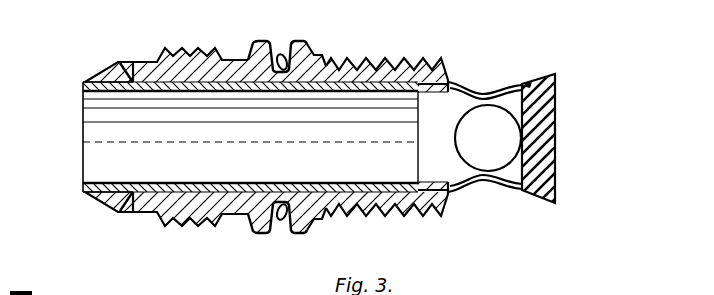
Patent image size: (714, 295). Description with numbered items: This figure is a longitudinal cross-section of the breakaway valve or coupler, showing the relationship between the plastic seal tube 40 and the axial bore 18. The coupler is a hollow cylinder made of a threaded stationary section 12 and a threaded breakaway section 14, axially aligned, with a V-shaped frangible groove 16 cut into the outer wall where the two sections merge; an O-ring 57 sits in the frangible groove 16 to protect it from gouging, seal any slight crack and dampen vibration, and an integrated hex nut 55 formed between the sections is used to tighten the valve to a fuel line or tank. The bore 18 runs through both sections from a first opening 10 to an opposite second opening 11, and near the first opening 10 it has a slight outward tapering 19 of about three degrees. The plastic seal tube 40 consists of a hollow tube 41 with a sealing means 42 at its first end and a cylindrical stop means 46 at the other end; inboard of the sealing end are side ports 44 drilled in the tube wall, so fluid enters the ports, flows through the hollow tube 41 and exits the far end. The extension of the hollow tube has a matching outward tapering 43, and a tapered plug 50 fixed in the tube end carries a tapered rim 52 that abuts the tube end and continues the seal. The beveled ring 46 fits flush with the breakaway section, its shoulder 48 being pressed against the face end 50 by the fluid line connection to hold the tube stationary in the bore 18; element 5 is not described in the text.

The first opening 10 is at (470, 195).
The second opening 11 is at (125, 80).
The threaded stationary section 12 is at (378, 56).
The threaded breakaway section 14 is at (172, 49).
The frangible groove 16 is at (318, 43).
The bore 18 is at (147, 84).
The outward tapering 19 is at (426, 92).
The plastic seal tube 40 is at (72, 161).
The hollow tube 41 is at (328, 58).
The sealing means 42 is at (489, 72).
The outward tapering 43 is at (538, 202).
The side ports 44 is at (500, 165).
The stop means 46 is at (103, 205).
The shoulder 48 is at (152, 216).
The face end 50 is at (135, 83).
The tapered rim 52 is at (534, 83).
The integrated hex nut 55 is at (300, 236).
The O-ring 57 is at (282, 238).
The coupling 5 is at (24, 291).